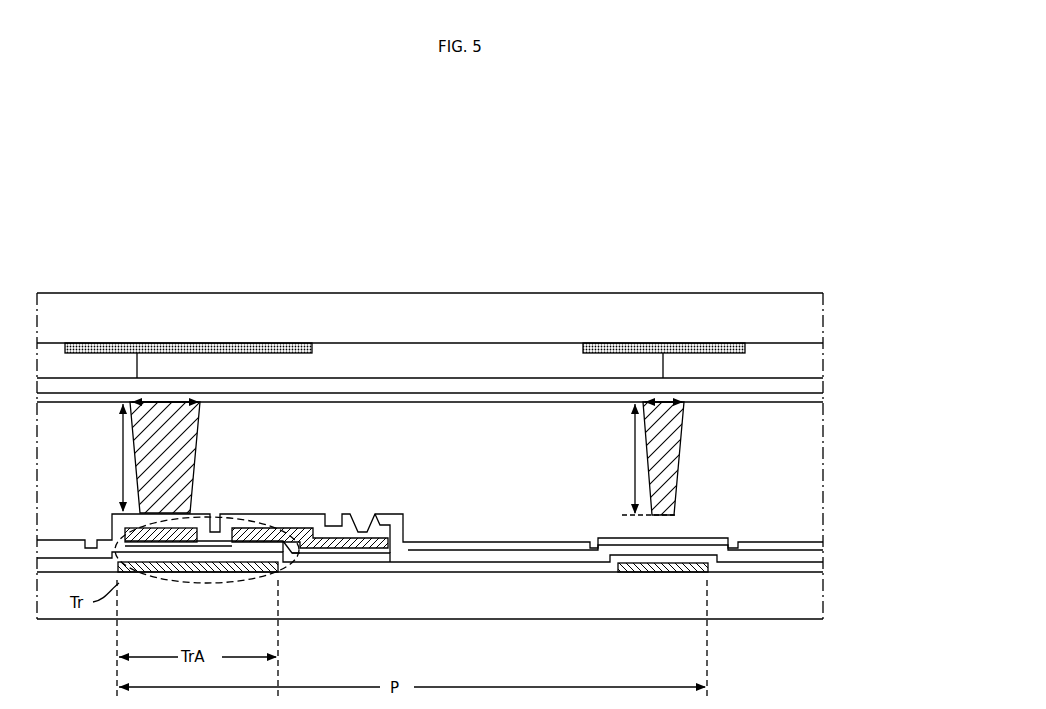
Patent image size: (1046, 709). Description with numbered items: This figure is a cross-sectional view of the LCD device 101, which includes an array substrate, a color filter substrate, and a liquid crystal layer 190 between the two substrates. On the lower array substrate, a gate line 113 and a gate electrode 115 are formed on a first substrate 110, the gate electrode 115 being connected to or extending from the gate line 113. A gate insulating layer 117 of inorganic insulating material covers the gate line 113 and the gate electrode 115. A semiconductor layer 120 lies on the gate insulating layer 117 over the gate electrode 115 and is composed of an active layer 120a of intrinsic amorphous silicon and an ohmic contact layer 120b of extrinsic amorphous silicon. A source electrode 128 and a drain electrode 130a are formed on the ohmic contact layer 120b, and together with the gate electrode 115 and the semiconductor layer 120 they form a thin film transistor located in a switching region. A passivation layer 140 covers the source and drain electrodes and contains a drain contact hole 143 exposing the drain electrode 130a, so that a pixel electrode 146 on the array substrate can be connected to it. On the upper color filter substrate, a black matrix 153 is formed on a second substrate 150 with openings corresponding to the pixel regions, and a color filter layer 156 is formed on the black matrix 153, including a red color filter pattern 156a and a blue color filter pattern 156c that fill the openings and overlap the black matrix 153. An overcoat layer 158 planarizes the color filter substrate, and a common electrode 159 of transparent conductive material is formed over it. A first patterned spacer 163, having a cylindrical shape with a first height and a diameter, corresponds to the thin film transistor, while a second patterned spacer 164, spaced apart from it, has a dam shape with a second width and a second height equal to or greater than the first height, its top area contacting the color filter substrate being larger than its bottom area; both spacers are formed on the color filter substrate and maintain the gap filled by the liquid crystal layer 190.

The LCD device 101 is at (784, 150).
The first substrate 110 is at (809, 612).
The gate line 113 is at (641, 573).
The gate electrode 115 is at (208, 573).
The gate insulating layer 117 is at (390, 565).
The semiconductor layer 120 is at (333, 612).
The active layer 120a is at (283, 554).
The ohmic contact layer 120b is at (318, 552).
The source electrode 128 is at (127, 527).
The source/drain electrode 130a is at (252, 528).
The passivation layer 140 is at (318, 514).
The drain contact hole 143 is at (366, 516).
The pixel electrode 146 is at (556, 541).
The second substrate 150 is at (808, 334).
The black matrix 153 is at (72, 343).
The color filter layer 156 is at (445, 257).
The red color filter pattern 156a is at (428, 362).
The blue color filter pattern 156c is at (118, 362).
The overcoat layer 158 is at (465, 393).
The common electrode 159 is at (333, 402).
The first patterned spacer 163 is at (153, 496).
The second patterned spacer 164 is at (670, 493).
The liquid crystal layer 190 is at (780, 441).